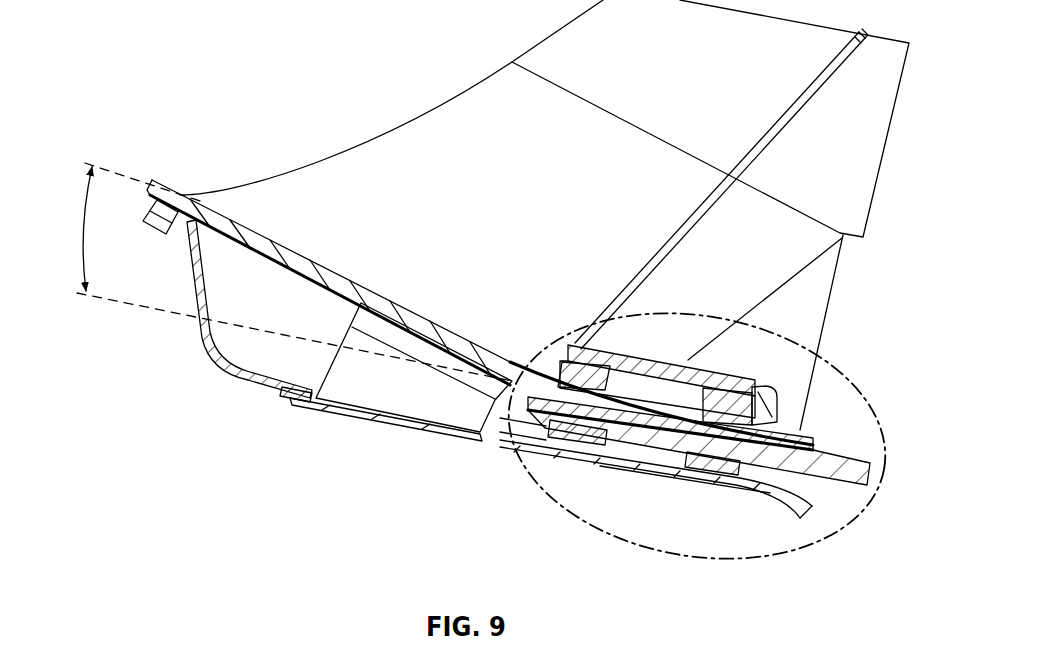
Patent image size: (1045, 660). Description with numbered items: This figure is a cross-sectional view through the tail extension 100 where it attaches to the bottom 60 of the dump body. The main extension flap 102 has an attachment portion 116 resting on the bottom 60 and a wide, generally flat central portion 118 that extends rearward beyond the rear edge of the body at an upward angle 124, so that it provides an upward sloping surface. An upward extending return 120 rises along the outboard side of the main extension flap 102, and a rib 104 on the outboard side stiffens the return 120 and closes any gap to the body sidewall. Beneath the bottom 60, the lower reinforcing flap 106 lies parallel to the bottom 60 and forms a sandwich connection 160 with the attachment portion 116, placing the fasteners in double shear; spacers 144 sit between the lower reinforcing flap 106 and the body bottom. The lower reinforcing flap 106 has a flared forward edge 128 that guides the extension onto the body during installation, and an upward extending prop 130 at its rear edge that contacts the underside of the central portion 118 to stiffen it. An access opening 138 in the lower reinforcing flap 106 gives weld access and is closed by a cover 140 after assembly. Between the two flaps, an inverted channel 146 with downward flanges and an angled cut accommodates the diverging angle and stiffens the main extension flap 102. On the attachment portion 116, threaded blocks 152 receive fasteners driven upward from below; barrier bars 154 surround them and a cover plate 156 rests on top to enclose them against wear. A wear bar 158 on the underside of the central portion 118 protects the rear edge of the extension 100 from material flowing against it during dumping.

The tail extension 100 is at (278, 58).
The main extension flap 102 is at (434, 286).
The rib 104 is at (802, 90).
The lower reinforcing flap 106 is at (620, 465).
The attachment portion 116 is at (803, 420).
The central portion 118 is at (287, 243).
The upward extending return 120 is at (478, 92).
The upward angle 124 is at (271, 272).
The flared forward edge 128 is at (814, 470).
The upward extending prop 130 is at (198, 335).
The access opening 138 is at (310, 388).
The cover 140 is at (375, 415).
The spacer 144 is at (556, 446).
The inverted channel 146 is at (455, 408).
The threaded block 152 is at (560, 362).
The barrier bar 154 is at (800, 410).
The cover plate 156 is at (650, 352).
The wear bar 158 is at (157, 232).
The sandwich connection 160 is at (593, 316).
The bottom of the dump body 60 is at (878, 484).